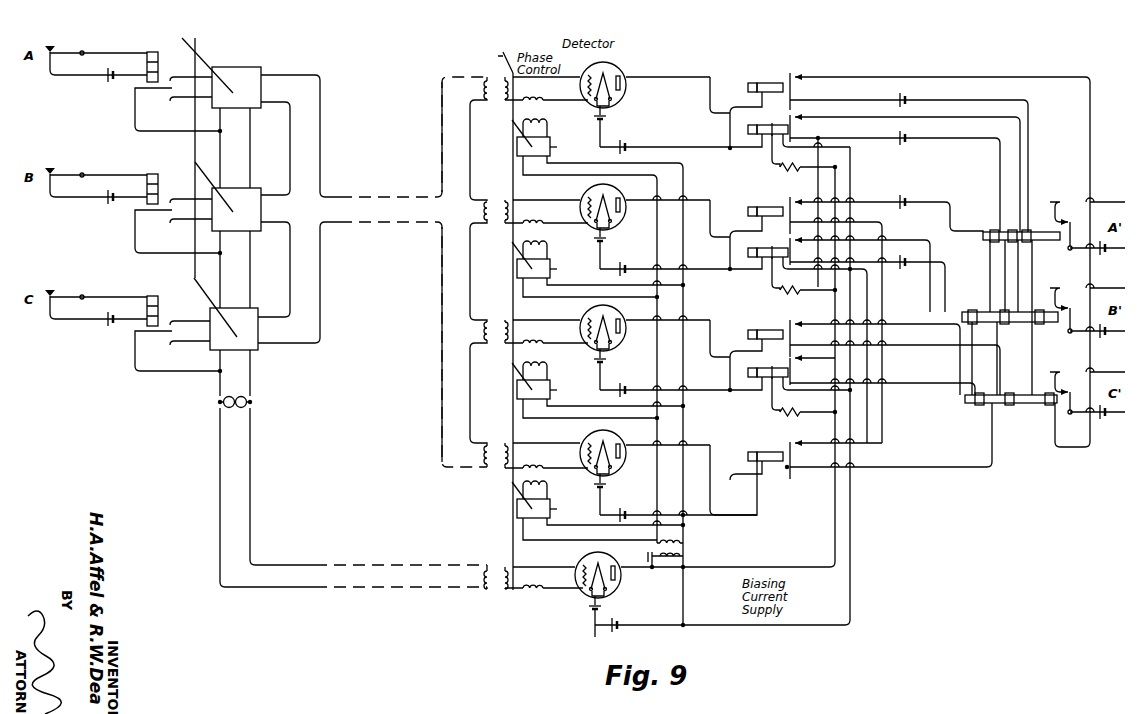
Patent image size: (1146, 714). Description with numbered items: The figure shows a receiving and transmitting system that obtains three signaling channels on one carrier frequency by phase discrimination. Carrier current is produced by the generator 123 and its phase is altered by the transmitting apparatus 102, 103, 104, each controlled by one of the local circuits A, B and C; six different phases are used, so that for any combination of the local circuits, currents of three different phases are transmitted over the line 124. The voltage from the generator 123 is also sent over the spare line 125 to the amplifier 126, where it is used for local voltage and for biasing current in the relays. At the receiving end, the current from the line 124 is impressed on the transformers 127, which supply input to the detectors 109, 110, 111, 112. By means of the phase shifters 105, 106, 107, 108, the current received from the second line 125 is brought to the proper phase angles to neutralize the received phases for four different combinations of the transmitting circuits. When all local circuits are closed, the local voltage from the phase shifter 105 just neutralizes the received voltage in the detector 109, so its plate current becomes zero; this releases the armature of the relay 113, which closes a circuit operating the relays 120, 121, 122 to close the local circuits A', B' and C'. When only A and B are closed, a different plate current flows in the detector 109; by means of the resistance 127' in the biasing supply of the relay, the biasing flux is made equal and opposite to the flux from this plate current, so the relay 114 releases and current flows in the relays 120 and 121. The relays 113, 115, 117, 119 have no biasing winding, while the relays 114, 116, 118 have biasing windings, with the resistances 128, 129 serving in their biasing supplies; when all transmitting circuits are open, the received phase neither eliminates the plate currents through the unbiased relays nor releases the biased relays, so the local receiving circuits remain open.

The transmitting apparatus 102 is at (180, 44).
The transmitting apparatus 103 is at (258, 233).
The transmitting apparatus 104 is at (256, 352).
The phase shifter 105 is at (597, 149).
The phase shifter 106 is at (598, 270).
The phase shifter 107 is at (598, 391).
The phase shifter 108 is at (598, 510).
The detector 109 is at (620, 70).
The detector 110 is at (620, 192).
The detector 111 is at (620, 313).
The detector 112 is at (620, 438).
The relay 113 is at (750, 107).
The relay 114 is at (757, 133).
The relay 115 is at (750, 230).
The relay 116 is at (757, 256).
The relay 117 is at (750, 352).
The relay 118 is at (757, 376).
The relay 119 is at (766, 462).
The relay 120 is at (1038, 243).
The relay 121 is at (1050, 325).
The relay 122 is at (1025, 405).
The generator 123 is at (249, 402).
The line 124 is at (413, 272).
The spare line 125 is at (401, 579).
The amplifier 126 is at (618, 585).
The transformers 127 is at (475, 333).
The resistance 127' is at (801, 162).
The resistance 128 is at (802, 285).
The resistance 129 is at (804, 406).